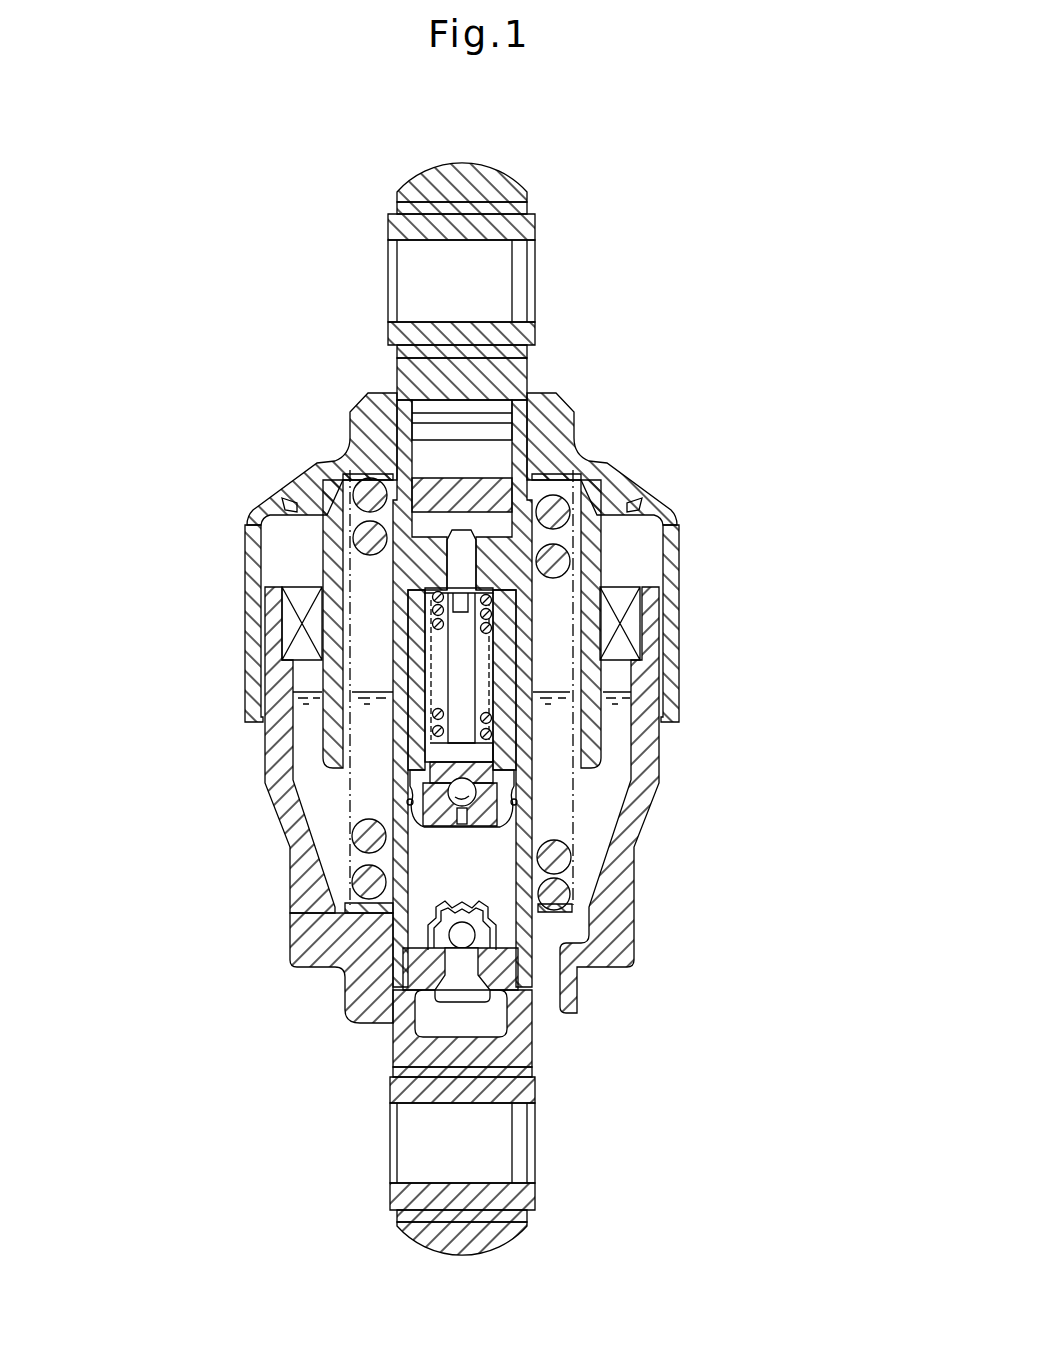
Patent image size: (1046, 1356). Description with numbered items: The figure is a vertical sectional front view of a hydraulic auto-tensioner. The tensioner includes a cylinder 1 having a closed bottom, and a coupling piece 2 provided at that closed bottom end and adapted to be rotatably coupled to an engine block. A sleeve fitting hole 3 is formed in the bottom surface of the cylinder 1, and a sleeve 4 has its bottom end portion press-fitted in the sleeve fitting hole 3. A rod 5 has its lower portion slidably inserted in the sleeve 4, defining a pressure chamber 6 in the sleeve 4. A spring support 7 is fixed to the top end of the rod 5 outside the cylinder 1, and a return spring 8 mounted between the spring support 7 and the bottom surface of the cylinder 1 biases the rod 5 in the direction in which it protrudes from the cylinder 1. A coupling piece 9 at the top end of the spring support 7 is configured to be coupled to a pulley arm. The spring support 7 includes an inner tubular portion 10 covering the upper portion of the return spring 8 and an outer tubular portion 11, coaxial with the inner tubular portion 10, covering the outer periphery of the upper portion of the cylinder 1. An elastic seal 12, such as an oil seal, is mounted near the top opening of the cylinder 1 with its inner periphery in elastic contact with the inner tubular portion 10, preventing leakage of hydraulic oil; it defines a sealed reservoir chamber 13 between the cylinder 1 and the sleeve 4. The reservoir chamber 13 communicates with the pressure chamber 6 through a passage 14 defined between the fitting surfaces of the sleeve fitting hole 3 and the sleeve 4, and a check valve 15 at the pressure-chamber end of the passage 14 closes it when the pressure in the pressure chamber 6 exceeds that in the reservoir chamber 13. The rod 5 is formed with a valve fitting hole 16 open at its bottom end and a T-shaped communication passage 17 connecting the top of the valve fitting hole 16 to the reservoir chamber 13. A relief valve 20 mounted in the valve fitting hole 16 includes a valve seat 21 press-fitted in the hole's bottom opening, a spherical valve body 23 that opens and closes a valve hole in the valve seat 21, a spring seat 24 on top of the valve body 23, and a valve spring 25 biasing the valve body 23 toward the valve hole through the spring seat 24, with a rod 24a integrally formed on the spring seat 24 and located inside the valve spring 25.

The cylinder 1 is at (283, 808).
The coupling piece 2 is at (430, 1240).
The sleeve fitting hole 3 is at (398, 943).
The sleeve 4 is at (397, 838).
The rod 5 is at (408, 568).
The pressure chamber 6 is at (400, 883).
The spring support 7 is at (373, 447).
The return spring 8 is at (343, 470).
The coupling piece 9 is at (492, 178).
The inner tubular portion 10 is at (585, 530).
The outer tubular portion 11 is at (668, 578).
The elastic seal 12 is at (633, 624).
The reservoir chamber 13 is at (615, 723).
The passage 14 is at (547, 977).
The check valve 15 is at (500, 930).
The valve fitting hole 16 is at (440, 690).
The communication passage 17 is at (323, 461).
The relief valve 20 is at (500, 858).
The valve seat 21 is at (486, 840).
The valve body 23 is at (490, 775).
The spring seat 24 is at (485, 752).
The rod 24a is at (460, 652).
The valve spring 25 is at (425, 598).